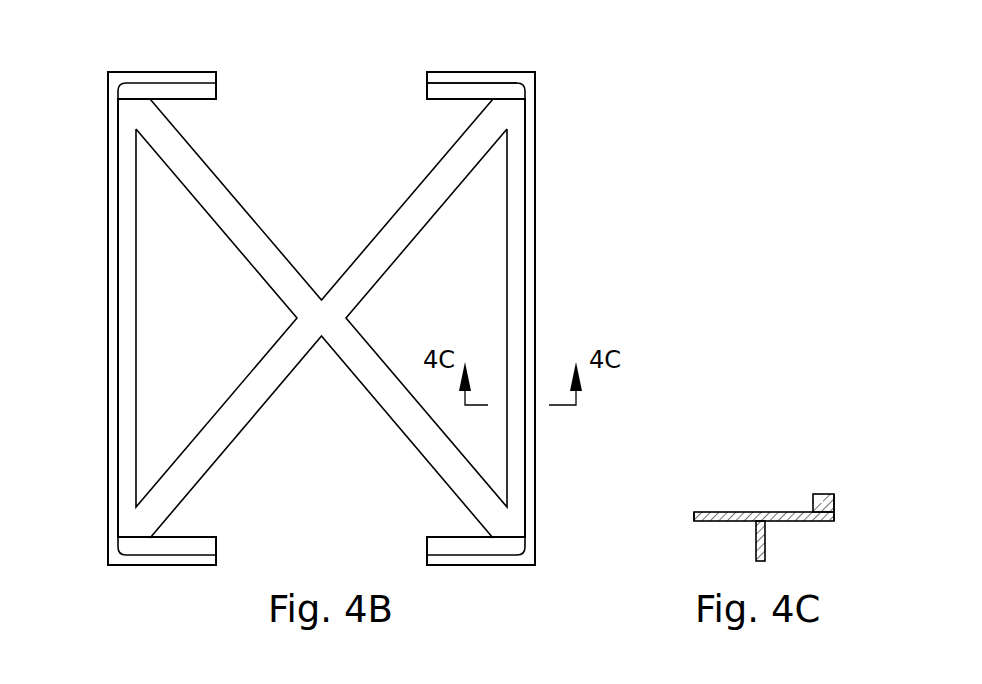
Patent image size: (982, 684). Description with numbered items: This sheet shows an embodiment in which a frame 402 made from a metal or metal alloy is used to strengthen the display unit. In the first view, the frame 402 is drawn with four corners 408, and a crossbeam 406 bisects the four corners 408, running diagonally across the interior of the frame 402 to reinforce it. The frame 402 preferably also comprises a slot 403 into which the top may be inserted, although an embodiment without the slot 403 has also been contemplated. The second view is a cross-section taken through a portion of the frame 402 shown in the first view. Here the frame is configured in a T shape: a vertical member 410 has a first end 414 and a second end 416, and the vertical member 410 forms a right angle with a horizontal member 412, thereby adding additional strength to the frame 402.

In FIG. 4B, the frame 402 is at (108, 155).
In FIG. 4B, the slot 403 is at (443, 84).
In FIG. 4C, the slot 403 is at (812, 507).
In FIG. 4B, the crossbeam 406 is at (260, 203).
In FIG. 4B, the corners 408 is at (127, 72).
In FIG. 4C, the vertical member 410 is at (756, 545).
In FIG. 4C, the horizontal member 412 is at (716, 512).
In FIG. 4C, the first end 414 is at (694, 517).
In FIG. 4C, the second end 416 is at (834, 506).